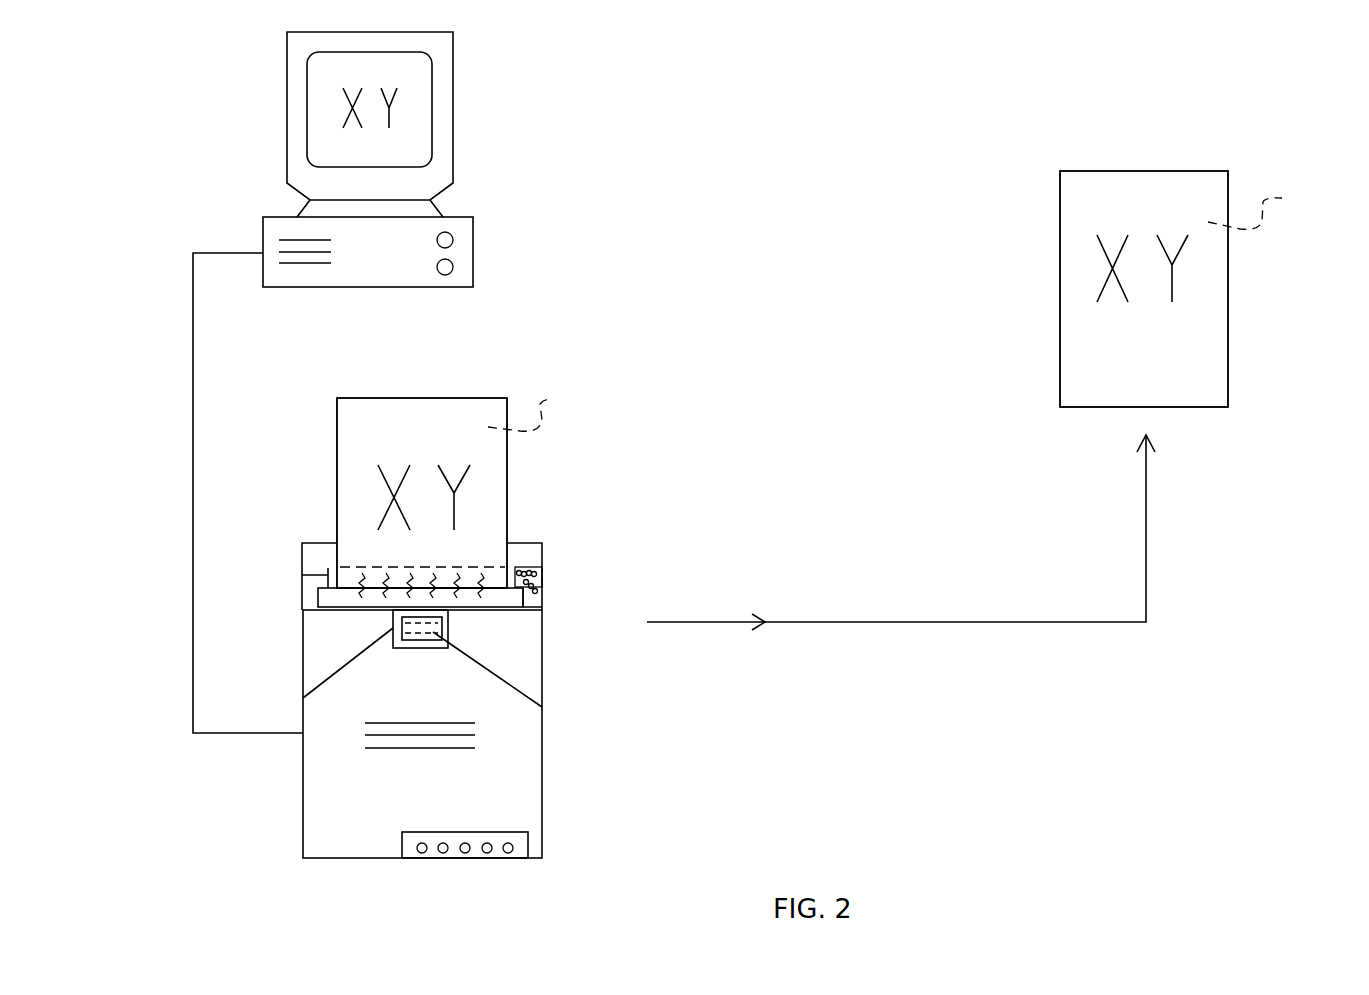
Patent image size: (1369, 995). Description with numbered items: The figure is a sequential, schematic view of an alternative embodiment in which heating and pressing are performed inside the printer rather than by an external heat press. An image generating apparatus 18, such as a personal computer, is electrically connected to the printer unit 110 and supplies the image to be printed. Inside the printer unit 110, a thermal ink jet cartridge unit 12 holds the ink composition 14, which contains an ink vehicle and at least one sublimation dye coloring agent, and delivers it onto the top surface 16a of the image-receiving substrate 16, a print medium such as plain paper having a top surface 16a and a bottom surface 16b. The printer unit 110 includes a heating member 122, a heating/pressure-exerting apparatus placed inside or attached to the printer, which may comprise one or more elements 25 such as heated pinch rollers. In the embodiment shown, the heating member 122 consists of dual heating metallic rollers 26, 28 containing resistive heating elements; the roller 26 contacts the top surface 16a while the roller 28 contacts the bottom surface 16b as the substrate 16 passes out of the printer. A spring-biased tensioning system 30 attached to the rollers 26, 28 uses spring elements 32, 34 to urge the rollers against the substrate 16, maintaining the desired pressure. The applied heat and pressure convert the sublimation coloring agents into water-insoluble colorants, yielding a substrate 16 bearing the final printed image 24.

The thermal ink jet cartridge unit 12 is at (303, 698).
The ink composition 14 is at (542, 707).
The image-receiving substrate 16 is at (463, 398).
The top surface 16a is at (357, 443).
The bottom surface 16b is at (910, 307).
The image generating apparatus 18 is at (447, 120).
The final printed image 24 is at (457, 507).
The elements 25 is at (318, 595).
The heating metallic roller 26 is at (318, 600).
The heating metallic roller 28 is at (328, 568).
The spring-biased tensioning system 30 is at (527, 560).
The spring element 32 is at (542, 593).
The spring element 34 is at (537, 572).
The printer unit 110 is at (332, 813).
The heating member 122 is at (497, 600).